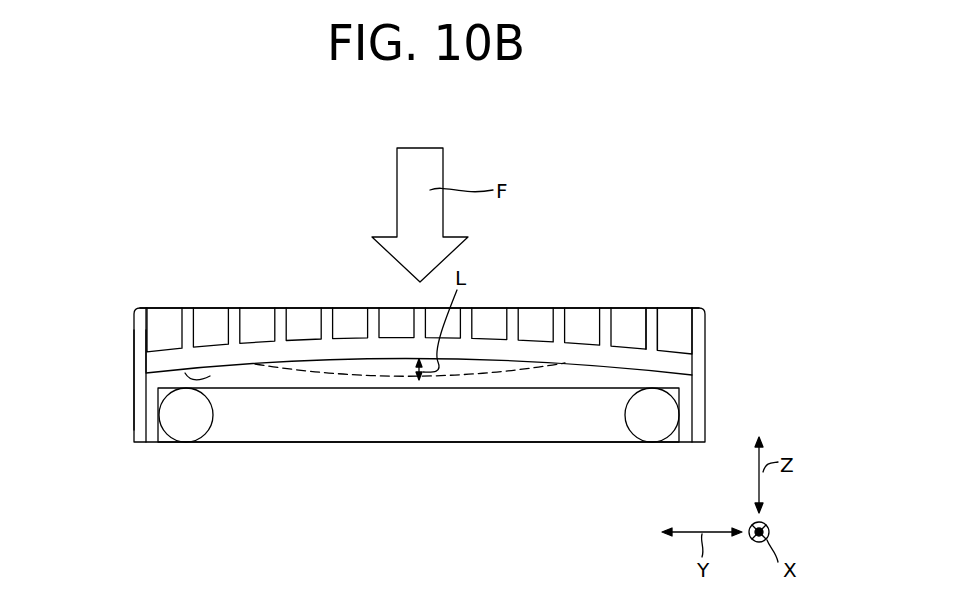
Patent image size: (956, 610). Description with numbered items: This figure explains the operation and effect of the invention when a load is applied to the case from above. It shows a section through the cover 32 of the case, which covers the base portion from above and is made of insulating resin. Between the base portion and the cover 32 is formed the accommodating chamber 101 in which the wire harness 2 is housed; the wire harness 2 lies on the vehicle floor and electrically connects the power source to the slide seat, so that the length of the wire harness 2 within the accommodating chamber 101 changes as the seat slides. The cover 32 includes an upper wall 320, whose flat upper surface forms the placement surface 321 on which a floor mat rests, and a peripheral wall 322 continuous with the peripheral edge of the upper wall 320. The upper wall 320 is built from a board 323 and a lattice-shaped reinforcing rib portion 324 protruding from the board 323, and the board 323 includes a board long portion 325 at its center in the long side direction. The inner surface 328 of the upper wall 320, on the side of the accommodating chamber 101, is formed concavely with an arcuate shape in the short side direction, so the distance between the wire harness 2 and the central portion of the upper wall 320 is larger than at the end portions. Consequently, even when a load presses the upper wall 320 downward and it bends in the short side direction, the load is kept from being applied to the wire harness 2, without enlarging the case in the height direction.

The wire harness 2 is at (432, 427).
The cover 32 is at (706, 331).
The accommodating chamber 101 is at (683, 405).
The upper wall 320 is at (398, 343).
The placement surface 321 is at (667, 307).
The peripheral wall 322 is at (693, 387).
The board 323 is at (140, 362).
The rib portion 324 is at (658, 327).
The board long portion 325 is at (153, 358).
The inner surface 328 is at (205, 374).